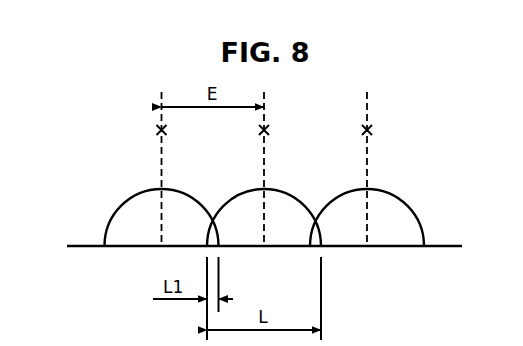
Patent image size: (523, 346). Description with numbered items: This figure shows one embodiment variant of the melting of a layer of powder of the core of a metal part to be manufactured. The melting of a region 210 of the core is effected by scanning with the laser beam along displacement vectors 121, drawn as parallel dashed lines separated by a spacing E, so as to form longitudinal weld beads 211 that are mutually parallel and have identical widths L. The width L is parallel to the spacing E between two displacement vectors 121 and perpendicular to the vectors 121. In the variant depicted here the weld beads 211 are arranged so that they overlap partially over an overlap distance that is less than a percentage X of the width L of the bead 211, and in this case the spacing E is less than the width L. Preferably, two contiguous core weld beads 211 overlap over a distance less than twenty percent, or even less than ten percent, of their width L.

The displacement vector 121 is at (159, 129).
The region of the core 210 is at (99, 217).
The longitudinal weld bead 211 is at (132, 235).